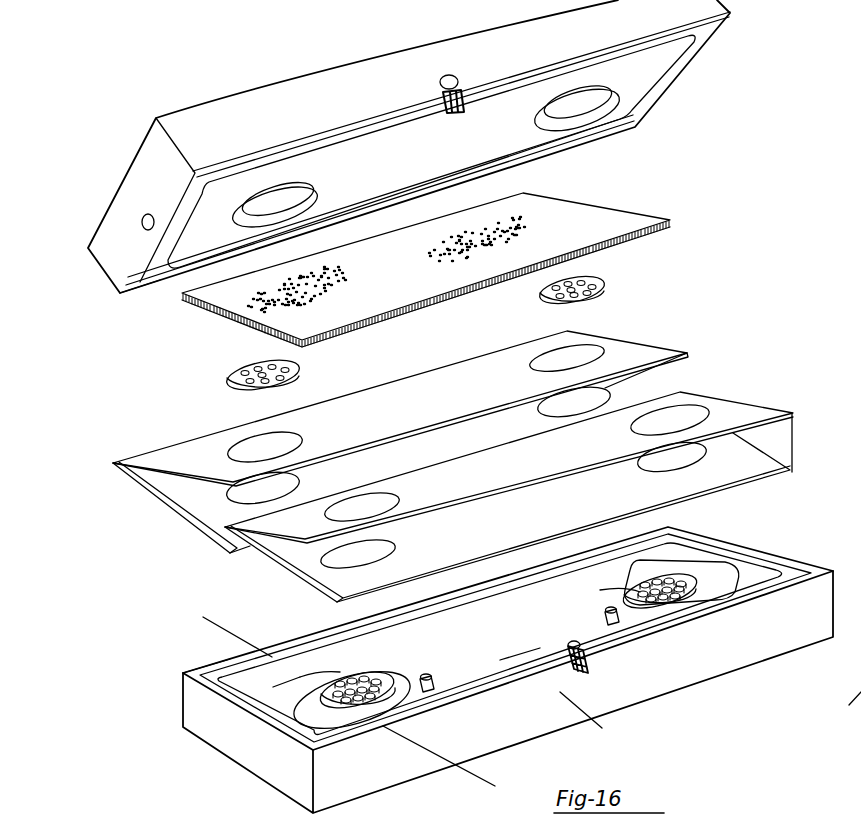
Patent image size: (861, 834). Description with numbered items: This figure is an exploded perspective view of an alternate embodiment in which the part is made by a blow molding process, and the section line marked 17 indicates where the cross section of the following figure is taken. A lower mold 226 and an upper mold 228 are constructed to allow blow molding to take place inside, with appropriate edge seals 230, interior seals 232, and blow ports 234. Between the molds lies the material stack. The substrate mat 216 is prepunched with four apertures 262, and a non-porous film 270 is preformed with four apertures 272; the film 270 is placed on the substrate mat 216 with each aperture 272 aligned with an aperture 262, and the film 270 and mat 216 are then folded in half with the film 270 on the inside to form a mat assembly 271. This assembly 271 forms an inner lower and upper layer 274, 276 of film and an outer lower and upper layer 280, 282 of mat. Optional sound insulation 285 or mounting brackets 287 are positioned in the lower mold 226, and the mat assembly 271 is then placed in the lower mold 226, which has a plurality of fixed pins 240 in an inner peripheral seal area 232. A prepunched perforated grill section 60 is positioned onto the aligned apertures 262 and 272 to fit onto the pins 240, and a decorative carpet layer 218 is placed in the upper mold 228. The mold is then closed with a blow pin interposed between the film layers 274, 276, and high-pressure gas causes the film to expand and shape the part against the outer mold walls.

The upper mold 228 is at (293, 78).
The blow ports 234 is at (457, 74).
The decorative carpet layer 218 is at (580, 206).
The edge seals 230 is at (159, 270).
The perforated grill section 60 is at (233, 370).
The mat assembly 271 is at (793, 413).
The outer upper layer of mat 282 is at (207, 478).
The outer lower layer of mat 280 is at (167, 517).
The substrate mat 216 is at (440, 413).
The non-porous film 270 is at (572, 462).
The apertures 262 is at (290, 480).
The apertures 272 is at (412, 535).
The inner upper layer of film 276 is at (263, 561).
The inner lower layer of film 274 is at (296, 572).
The lower mold 226 is at (568, 702).
The fixed pins 240 is at (335, 680).
The mounting brackets 287 is at (436, 686).
The interior seals 232 is at (432, 684).
The sound insulation 285 is at (583, 690).
The section line 17- 17 is at (206, 623).